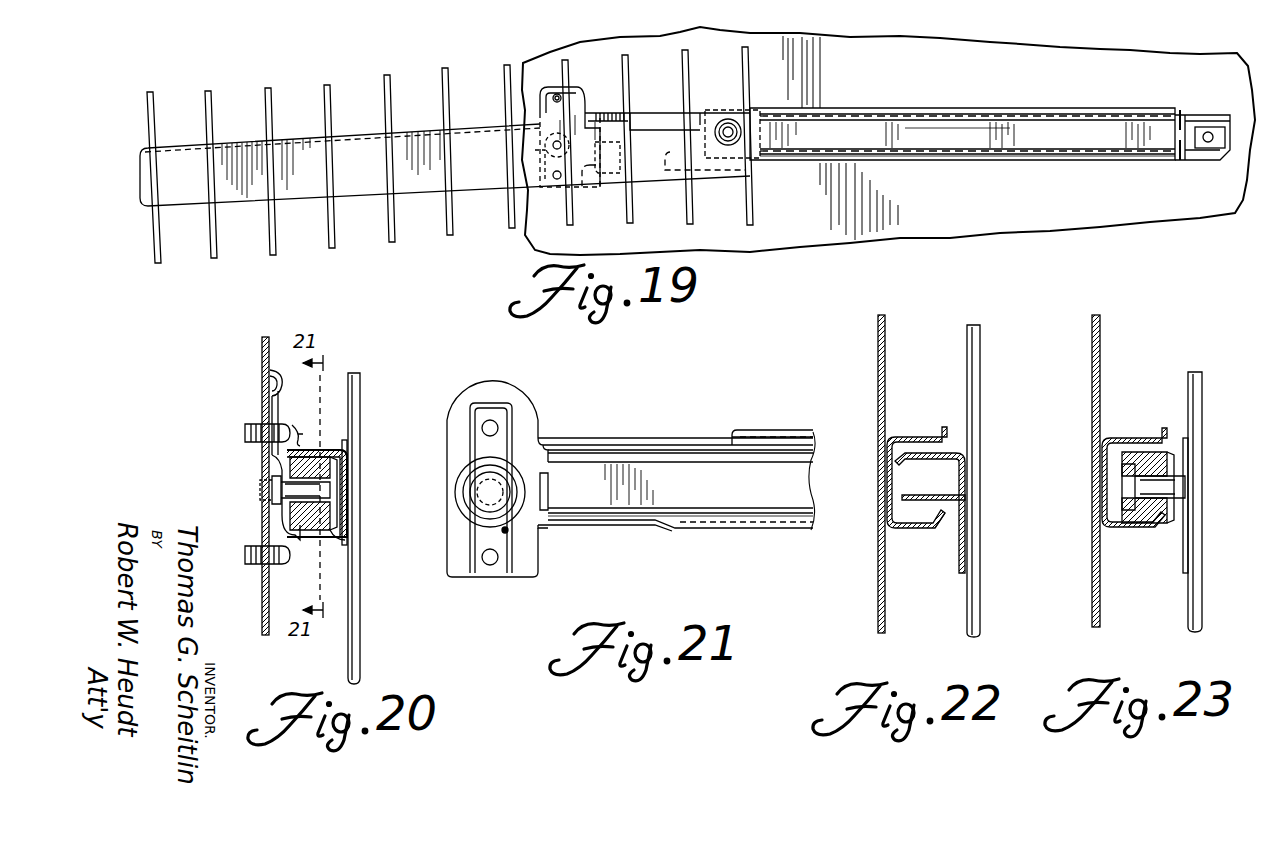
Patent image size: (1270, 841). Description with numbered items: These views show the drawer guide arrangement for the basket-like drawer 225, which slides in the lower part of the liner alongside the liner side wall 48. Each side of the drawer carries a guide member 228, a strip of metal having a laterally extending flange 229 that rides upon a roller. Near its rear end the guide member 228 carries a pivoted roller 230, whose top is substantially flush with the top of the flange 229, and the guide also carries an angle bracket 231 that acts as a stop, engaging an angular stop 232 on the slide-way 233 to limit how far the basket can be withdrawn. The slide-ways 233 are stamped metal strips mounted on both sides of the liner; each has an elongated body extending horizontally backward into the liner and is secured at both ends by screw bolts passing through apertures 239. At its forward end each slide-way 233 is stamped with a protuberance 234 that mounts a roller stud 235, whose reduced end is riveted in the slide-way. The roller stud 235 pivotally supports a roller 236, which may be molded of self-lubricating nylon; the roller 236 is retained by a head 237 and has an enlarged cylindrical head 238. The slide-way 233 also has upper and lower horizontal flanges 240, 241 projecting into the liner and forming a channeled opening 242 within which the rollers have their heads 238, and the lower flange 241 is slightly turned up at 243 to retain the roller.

In FIG. 20, the side wall 48 is at (262, 616).
In FIG. 22, the side wall 48 is at (876, 597).
In FIG. 23, the side wall 48 is at (1090, 574).
In FIG. 20, the drawer 225 is at (362, 630).
In FIG. 22, the drawer 225 is at (984, 602).
In FIG. 23, the drawer 225 is at (1206, 588).
In FIG. 19, the guide member 228 is at (378, 205).
In FIG. 20, the guide member 228 is at (350, 545).
In FIG. 22, the guide member 228 is at (957, 548).
In FIG. 23, the guide member 228 is at (1182, 558).
In FIG. 19, the laterally extending flange 229 is at (346, 140).
In FIG. 20, the laterally extending flange 229 is at (342, 455).
In FIG. 19, the pivoted roller 230 is at (730, 148).
In FIG. 23, the pivoted roller 230 is at (1150, 464).
In FIG. 19, the angle bracket 231 is at (612, 120).
In FIG. 21, the angle bracket 231 is at (492, 479).
In FIG. 22, the angle bracket 231 is at (925, 494).
In FIG. 19, the angular stop 232 is at (605, 142).
In FIG. 21, the angular stop 232 is at (550, 483).
In FIG. 19, the slide-way 233 is at (940, 102).
In FIG. 21, the slide-way 233 is at (660, 535).
In FIG. 22, the slide-way 233 is at (900, 432).
In FIG. 23, the slide-way 233 is at (1115, 528).
In FIG. 19, the protuberance 234 is at (545, 101).
In FIG. 20, the protuberance 234 is at (270, 374).
In FIG. 20, the roller stud 235 is at (270, 488).
In FIG. 19, the roller 236 is at (544, 150).
In FIG. 20, the roller 236 is at (285, 468).
In FIG. 21, the roller 236 is at (510, 532).
In FIG. 20, the head 237 is at (340, 480).
In FIG. 21, the head 237 is at (503, 485).
In FIG. 20, the enlarged cylindrical head 238 is at (342, 528).
In FIG. 19, the apertures 239 is at (556, 87).
In FIG. 20, the apertures 239 is at (252, 424).
In FIG. 21, the apertures 239 is at (494, 428).
In FIG. 19, the upper horizontal flange 240 is at (857, 118).
In FIG. 20, the upper horizontal flange 240 is at (298, 425).
In FIG. 21, the upper horizontal flange 240 is at (800, 450).
In FIG. 19, the lower horizontal flange 241 is at (962, 162).
In FIG. 20, the lower horizontal flange 241 is at (292, 538).
In FIG. 21, the lower horizontal flange 241 is at (793, 532).
In FIG. 19, the channeled opening 242 is at (970, 131).
In FIG. 21, the channeled opening 242 is at (700, 478).
In FIG. 19, the turned-up portion 243 is at (1030, 156).
In FIG. 21, the turned-up portion 243 is at (725, 520).
In FIG. 22, the turned-up portion 243 is at (928, 530).